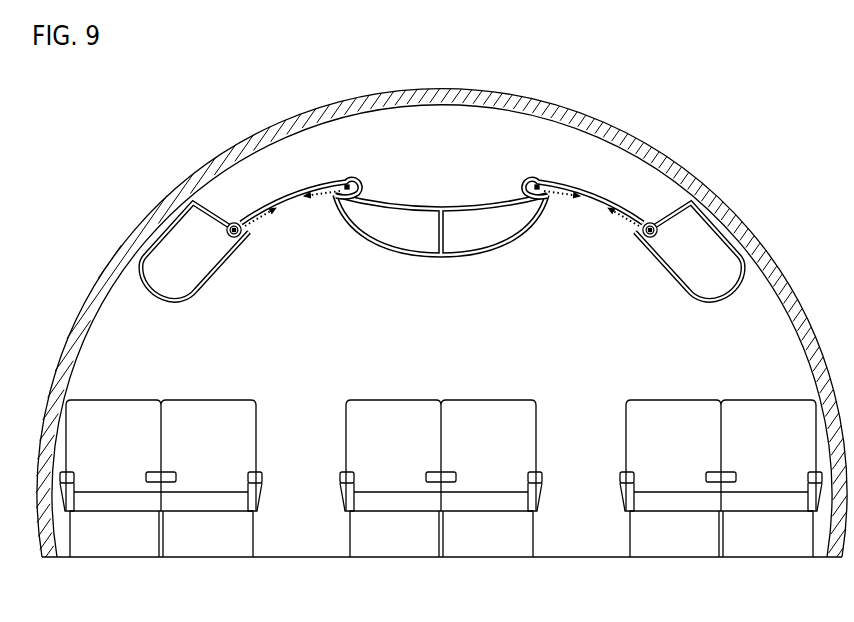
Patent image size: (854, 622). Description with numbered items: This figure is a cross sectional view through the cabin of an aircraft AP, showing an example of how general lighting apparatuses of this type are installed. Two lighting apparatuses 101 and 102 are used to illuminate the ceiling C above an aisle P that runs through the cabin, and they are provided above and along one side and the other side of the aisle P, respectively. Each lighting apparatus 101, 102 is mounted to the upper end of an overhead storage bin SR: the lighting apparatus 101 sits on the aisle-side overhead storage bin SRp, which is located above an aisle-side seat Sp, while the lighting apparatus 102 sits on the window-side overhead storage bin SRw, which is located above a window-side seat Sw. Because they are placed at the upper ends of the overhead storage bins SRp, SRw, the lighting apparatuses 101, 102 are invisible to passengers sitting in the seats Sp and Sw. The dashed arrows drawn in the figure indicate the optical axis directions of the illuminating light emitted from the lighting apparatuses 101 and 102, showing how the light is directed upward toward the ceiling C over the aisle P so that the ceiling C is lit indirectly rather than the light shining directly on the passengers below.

The aircraft AP is at (189, 172).
The lighting apparatus 101 is at (234, 222).
The lighting apparatus 102 is at (348, 181).
The ceiling C is at (292, 196).
The overhead storage bin SRw is at (162, 278).
The overhead storage bin SR is at (442, 280).
The overhead storage bin SRp is at (406, 238).
The window-side seat Sw is at (238, 397).
The aisle-side seat Sp is at (488, 396).
The aisle P is at (300, 553).